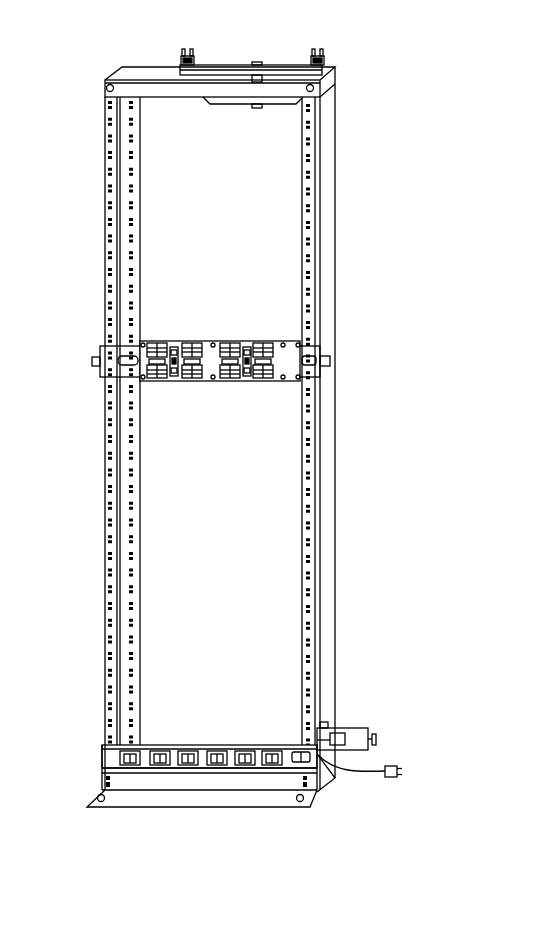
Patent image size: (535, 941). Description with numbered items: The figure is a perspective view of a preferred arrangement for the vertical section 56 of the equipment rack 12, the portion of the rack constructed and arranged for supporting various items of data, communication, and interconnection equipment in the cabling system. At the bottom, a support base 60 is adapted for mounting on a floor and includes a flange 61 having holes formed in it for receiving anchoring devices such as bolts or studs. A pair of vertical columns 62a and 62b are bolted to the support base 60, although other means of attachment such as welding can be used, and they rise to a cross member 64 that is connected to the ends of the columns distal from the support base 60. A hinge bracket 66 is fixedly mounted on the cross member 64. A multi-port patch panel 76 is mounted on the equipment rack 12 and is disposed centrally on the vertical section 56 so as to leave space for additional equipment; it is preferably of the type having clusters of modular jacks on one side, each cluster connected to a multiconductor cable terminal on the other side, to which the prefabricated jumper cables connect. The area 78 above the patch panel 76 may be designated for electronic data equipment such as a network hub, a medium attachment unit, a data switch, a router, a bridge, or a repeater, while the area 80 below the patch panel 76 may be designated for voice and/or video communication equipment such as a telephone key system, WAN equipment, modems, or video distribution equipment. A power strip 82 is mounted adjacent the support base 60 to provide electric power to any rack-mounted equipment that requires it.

The equipment rack 12 is at (422, 450).
The vertical section 56 is at (92, 560).
The support base 60 is at (103, 778).
The flange 61 is at (280, 800).
The vertical column 62a is at (105, 196).
The vertical column 62b is at (323, 187).
The cross member 64 is at (136, 77).
The hinge bracket 66 is at (275, 65).
The multi-port patch panel 76 is at (300, 370).
The area 78 is at (232, 226).
The area 80 is at (232, 592).
The power strip 82 is at (199, 752).